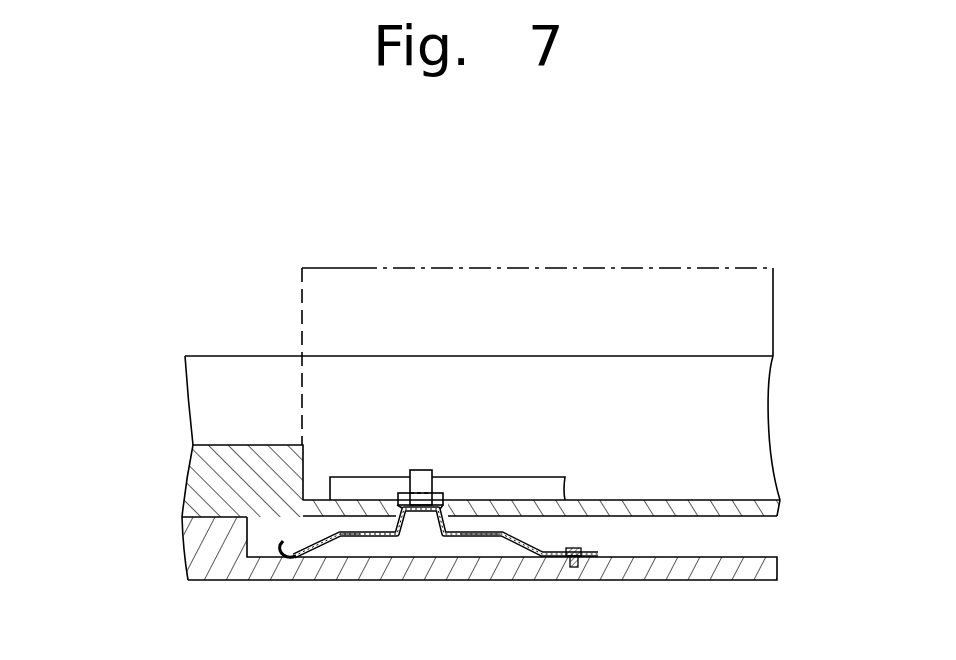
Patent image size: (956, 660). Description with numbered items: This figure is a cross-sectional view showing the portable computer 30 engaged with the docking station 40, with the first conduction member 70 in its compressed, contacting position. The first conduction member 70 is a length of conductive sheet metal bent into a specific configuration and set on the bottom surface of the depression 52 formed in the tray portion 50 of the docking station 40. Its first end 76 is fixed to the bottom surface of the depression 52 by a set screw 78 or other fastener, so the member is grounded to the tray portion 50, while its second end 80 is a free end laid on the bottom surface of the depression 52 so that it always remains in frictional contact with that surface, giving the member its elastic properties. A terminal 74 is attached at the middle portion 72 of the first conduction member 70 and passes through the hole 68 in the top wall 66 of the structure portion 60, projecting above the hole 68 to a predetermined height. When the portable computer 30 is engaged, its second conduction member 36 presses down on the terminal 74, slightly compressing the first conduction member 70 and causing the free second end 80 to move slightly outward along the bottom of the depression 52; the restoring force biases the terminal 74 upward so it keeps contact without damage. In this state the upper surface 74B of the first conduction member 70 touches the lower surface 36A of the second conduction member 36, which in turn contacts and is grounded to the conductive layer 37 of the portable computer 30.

The portable computer 30 is at (463, 258).
The second conduction member 36 is at (418, 485).
The lower surface of second conduction member 36A is at (347, 538).
The conductive layer 37 is at (522, 487).
The docking station 40 is at (157, 467).
The tray portion 50 is at (210, 575).
The depression 52 is at (775, 537).
The structure portion 60 is at (251, 368).
The top wall 66 is at (582, 505).
The hole 68 is at (447, 507).
The first conduction member 70 is at (382, 556).
The middle portion 72 is at (477, 540).
The terminal 74 is at (398, 500).
The upper surface of first conduction member 74B is at (402, 506).
The first end 76 is at (567, 556).
The set screw 78 is at (573, 567).
The second end 80 is at (286, 558).